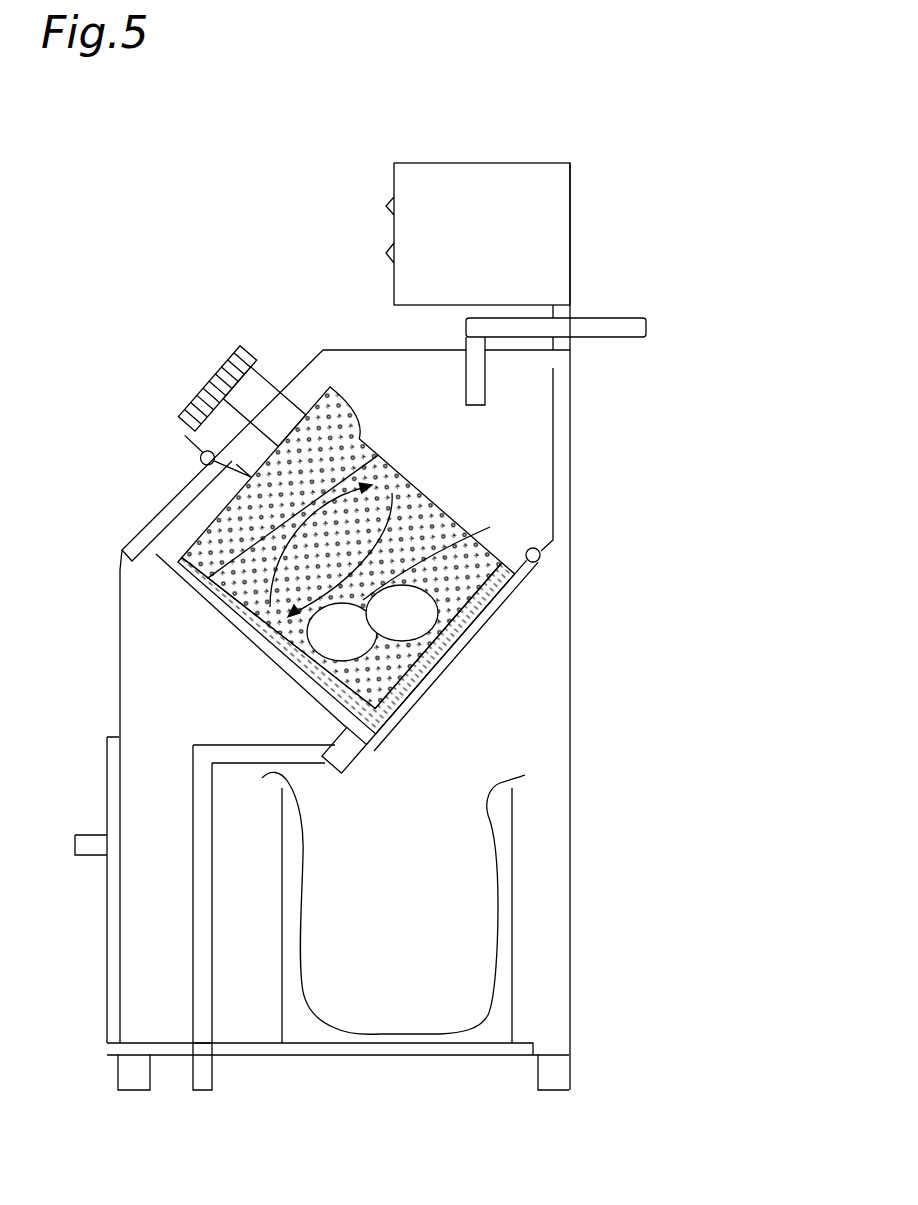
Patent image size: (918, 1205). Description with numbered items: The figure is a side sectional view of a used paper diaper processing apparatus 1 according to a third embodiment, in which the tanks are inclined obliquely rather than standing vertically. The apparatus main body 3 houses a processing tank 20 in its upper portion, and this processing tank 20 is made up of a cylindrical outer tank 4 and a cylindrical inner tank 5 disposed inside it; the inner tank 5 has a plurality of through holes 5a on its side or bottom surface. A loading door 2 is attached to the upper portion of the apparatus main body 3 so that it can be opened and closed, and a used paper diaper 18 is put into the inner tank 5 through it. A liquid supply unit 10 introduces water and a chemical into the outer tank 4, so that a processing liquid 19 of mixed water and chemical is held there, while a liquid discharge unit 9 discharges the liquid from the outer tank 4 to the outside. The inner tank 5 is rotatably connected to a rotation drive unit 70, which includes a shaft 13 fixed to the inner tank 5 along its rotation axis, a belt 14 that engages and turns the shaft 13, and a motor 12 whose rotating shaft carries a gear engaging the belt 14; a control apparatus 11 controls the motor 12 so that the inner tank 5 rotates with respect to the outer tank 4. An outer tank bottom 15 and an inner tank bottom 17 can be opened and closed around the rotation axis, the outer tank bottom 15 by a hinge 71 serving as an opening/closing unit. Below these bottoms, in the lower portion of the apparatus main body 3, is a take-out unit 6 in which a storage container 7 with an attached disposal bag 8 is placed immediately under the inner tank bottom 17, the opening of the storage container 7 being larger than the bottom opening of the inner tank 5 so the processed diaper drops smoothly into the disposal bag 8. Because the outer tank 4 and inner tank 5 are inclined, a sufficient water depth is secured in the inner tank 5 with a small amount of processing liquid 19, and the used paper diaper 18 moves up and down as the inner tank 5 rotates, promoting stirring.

The used paper diaper processing apparatus 1 is at (203, 228).
The loading door 2 is at (137, 520).
The apparatus main body 3 is at (120, 622).
The outer tank 4 is at (272, 662).
The inner tank 5 is at (428, 485).
The through holes 5a is at (362, 438).
The take-out unit 6 is at (105, 790).
The storage container 7 is at (282, 935).
The disposal bag 8 is at (308, 845).
The liquid discharge unit 9 is at (193, 985).
The liquid supply unit 10 is at (627, 316).
The control apparatus 11 is at (572, 213).
The motor 12 is at (253, 372).
The shaft 13 is at (190, 455).
The belt 14 is at (212, 384).
The outer tank bottom 15 is at (493, 608).
The inner tank bottom 17 is at (407, 700).
The used paper diaper 18 is at (398, 586).
The processing liquid 19 is at (250, 628).
The processing tank 20 is at (505, 437).
The rotation drive unit 70 is at (213, 380).
The hinge 71 is at (541, 556).